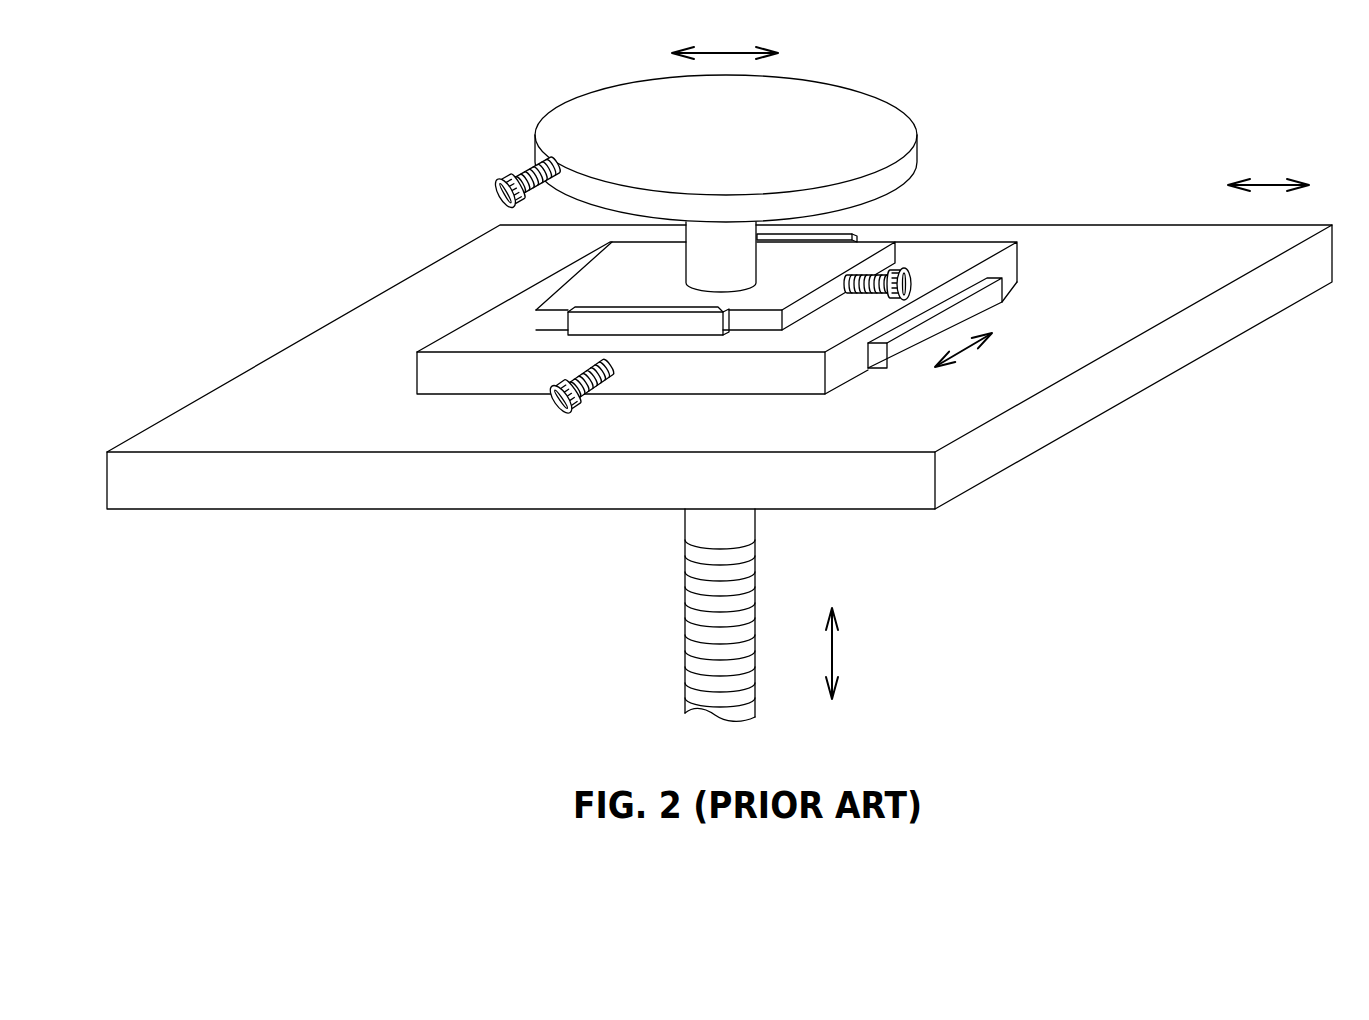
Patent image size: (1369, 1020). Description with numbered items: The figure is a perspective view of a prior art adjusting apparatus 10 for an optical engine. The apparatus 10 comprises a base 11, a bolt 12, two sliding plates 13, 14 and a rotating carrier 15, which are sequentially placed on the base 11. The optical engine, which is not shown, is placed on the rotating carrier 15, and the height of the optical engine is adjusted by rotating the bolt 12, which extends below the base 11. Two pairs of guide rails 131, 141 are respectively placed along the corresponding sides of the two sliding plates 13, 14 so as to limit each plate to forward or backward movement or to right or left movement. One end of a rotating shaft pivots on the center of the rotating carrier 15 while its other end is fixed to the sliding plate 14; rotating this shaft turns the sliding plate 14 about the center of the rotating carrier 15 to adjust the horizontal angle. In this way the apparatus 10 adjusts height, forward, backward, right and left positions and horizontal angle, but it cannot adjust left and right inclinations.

The adjusting apparatus 10 is at (719, 384).
The base 11 is at (407, 495).
The bolt 12 is at (695, 628).
The sliding plate 13 is at (792, 283).
The guide rails 131 is at (1003, 277).
The sliding plate 14 is at (784, 243).
The guide rails 141 is at (853, 235).
The rotating carrier 15 is at (857, 108).